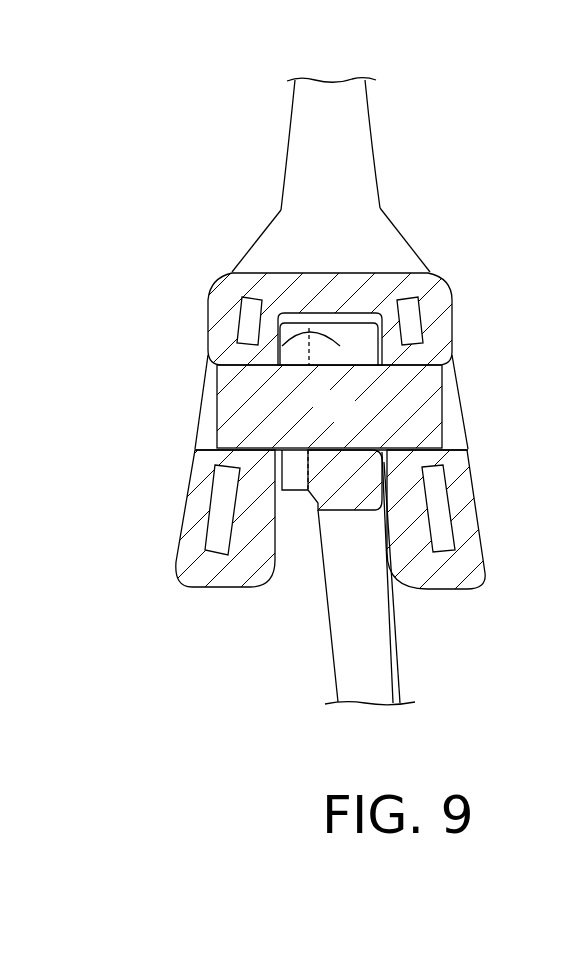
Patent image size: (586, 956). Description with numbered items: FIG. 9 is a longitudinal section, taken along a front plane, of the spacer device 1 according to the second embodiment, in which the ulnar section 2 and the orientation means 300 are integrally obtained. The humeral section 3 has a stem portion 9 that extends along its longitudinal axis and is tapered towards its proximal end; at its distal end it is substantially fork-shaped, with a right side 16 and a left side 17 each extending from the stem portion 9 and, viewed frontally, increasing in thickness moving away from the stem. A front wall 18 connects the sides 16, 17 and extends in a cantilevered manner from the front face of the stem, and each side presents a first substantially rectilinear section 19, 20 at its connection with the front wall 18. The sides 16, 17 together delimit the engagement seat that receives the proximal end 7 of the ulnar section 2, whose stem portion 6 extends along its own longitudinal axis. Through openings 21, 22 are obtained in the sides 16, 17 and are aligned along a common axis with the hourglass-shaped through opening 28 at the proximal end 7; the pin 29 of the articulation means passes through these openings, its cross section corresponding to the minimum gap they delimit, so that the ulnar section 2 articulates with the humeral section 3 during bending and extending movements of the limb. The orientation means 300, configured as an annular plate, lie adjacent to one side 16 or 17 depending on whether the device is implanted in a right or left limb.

The spacer device 1 is at (331, 373).
The ulnar section 2 is at (404, 577).
The humeral section 3 is at (243, 137).
The stem portion 6 is at (368, 663).
The proximal end 7 is at (393, 315).
The stem portion 9 is at (340, 118).
The right side 16 is at (480, 527).
The left side 17 is at (178, 551).
The front wall 18 is at (325, 257).
The first substantially rectilinear section 19 is at (413, 244).
The first substantially rectilinear section 20 is at (313, 312).
The through opening 21 is at (325, 406).
The through opening 22 is at (273, 406).
The through opening 28 is at (283, 335).
The pin 29 is at (352, 422).
The orientation means 300 is at (289, 493).